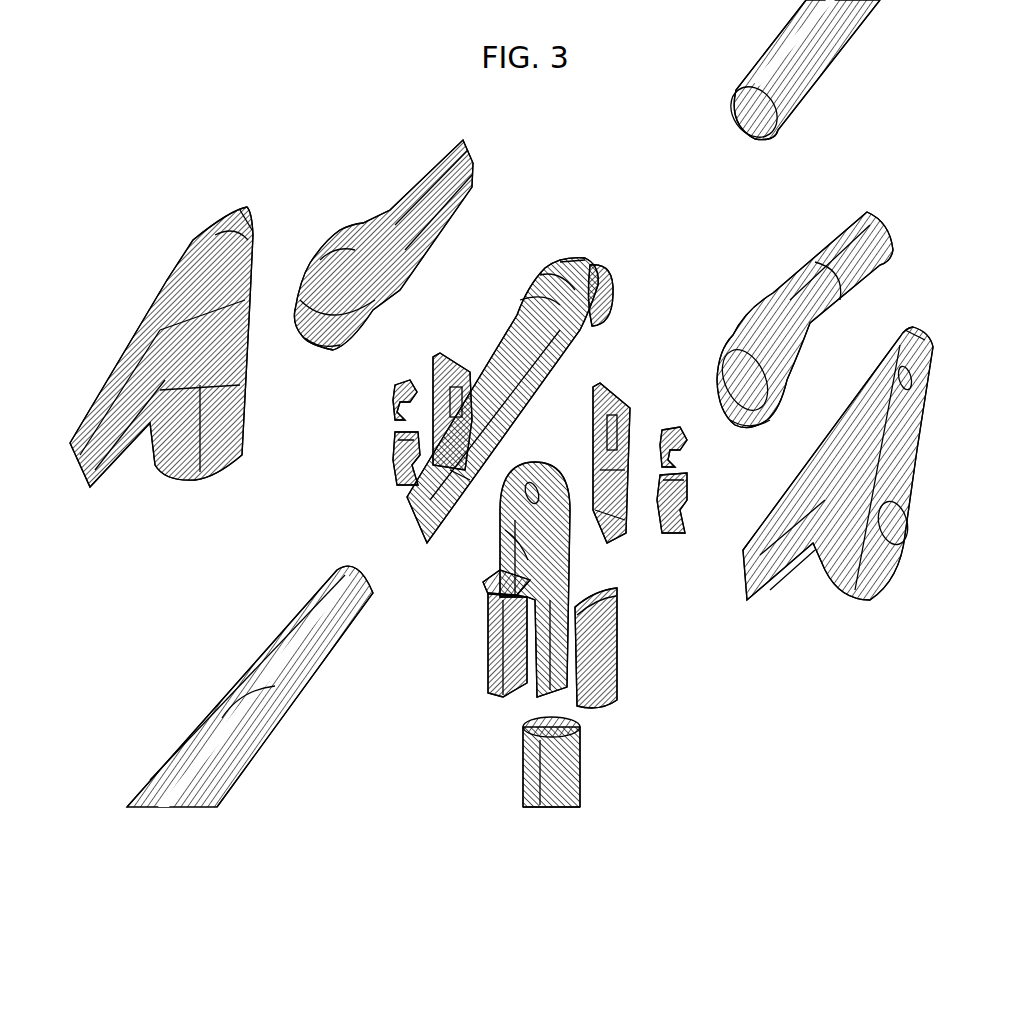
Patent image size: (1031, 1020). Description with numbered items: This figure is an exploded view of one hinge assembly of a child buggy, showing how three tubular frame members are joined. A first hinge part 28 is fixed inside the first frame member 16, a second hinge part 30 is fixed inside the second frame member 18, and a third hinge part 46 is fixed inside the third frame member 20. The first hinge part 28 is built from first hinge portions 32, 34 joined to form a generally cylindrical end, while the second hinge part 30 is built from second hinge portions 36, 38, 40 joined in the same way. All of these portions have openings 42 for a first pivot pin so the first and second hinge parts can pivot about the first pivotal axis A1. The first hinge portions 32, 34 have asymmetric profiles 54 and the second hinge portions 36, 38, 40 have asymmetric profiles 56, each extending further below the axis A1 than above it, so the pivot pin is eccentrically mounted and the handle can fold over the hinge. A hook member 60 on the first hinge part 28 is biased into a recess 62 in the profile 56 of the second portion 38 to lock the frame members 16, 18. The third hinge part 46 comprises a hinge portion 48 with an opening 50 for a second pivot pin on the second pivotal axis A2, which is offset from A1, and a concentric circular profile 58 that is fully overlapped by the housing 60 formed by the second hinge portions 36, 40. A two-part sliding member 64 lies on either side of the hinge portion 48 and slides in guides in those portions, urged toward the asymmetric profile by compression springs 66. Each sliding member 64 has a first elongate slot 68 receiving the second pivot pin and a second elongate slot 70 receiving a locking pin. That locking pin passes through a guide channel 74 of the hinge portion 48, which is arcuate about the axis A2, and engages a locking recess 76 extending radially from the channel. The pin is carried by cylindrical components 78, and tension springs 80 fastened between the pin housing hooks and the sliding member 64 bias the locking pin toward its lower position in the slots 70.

The first frame member 16 is at (825, 30).
The second frame member 18 is at (280, 670).
The third frame member 20 is at (557, 777).
The first hinge part 28 is at (537, 174).
The second hinge part 30 is at (148, 492).
The first hinge portion 32 is at (390, 210).
The first hinge portion 34 is at (878, 224).
The second hinge portion 36 is at (163, 312).
The second hinge portion 38 is at (533, 272).
The second hinge portion 40 is at (912, 437).
The opening 42 is at (210, 247).
The third hinge part 46 is at (643, 680).
The hinge portion 48 is at (507, 687).
The opening 50 is at (487, 594).
The asymmetric profile 54 is at (333, 350).
The asymmetric profile 56 is at (247, 237).
The concentric circular profile 58 is at (500, 543).
The housing 60 is at (603, 262).
The recess 62 is at (527, 321).
The sliding member 64 is at (437, 357).
The compression spring 66 is at (622, 533).
The first elongate slot 68 is at (633, 437).
The second elongate slot 70 is at (622, 397).
The guide channel 74 is at (528, 485).
The locking recess 76 is at (553, 470).
The cylindrical component 78 is at (398, 458).
The tension spring 80 is at (400, 383).
The first pivotal axis A1 is at (63, 198).
The second pivotal axis A2 is at (573, 550).